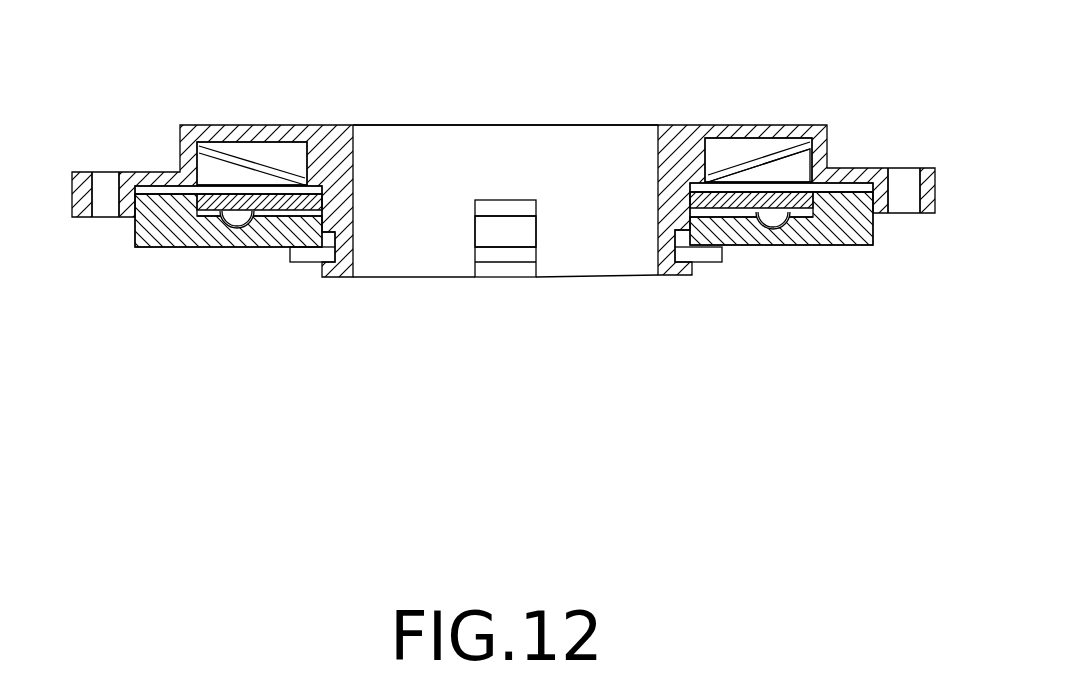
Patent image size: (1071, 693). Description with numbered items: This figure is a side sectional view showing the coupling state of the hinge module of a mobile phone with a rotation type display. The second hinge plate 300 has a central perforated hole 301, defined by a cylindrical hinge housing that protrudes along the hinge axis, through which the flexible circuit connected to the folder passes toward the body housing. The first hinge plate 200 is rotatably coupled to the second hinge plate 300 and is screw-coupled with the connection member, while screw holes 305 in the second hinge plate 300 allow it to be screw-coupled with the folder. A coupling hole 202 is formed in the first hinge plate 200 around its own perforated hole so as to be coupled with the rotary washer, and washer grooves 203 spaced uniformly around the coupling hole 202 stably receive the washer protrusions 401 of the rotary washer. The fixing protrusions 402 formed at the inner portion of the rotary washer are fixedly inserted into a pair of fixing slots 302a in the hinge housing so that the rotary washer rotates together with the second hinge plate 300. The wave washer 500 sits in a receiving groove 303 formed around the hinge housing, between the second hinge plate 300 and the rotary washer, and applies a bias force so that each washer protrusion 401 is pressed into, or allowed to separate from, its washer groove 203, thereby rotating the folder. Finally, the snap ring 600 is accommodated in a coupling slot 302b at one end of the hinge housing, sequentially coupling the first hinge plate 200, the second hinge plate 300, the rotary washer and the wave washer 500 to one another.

The second hinge plate 300 is at (690, 120).
The perforated hole 301 is at (477, 132).
The fixing slots 302a is at (518, 267).
The coupling slot 302b is at (333, 241).
The receiving groove 303 is at (762, 143).
The screw holes 305 is at (908, 215).
The wave washer 500 is at (787, 160).
The first hinge plate 200 is at (865, 248).
The coupling hole 202 is at (201, 247).
The washer groove 203 is at (779, 228).
The washer protrusion 401 is at (752, 225).
The fixing protrusions 402 is at (502, 207).
The snap ring 600 is at (305, 256).